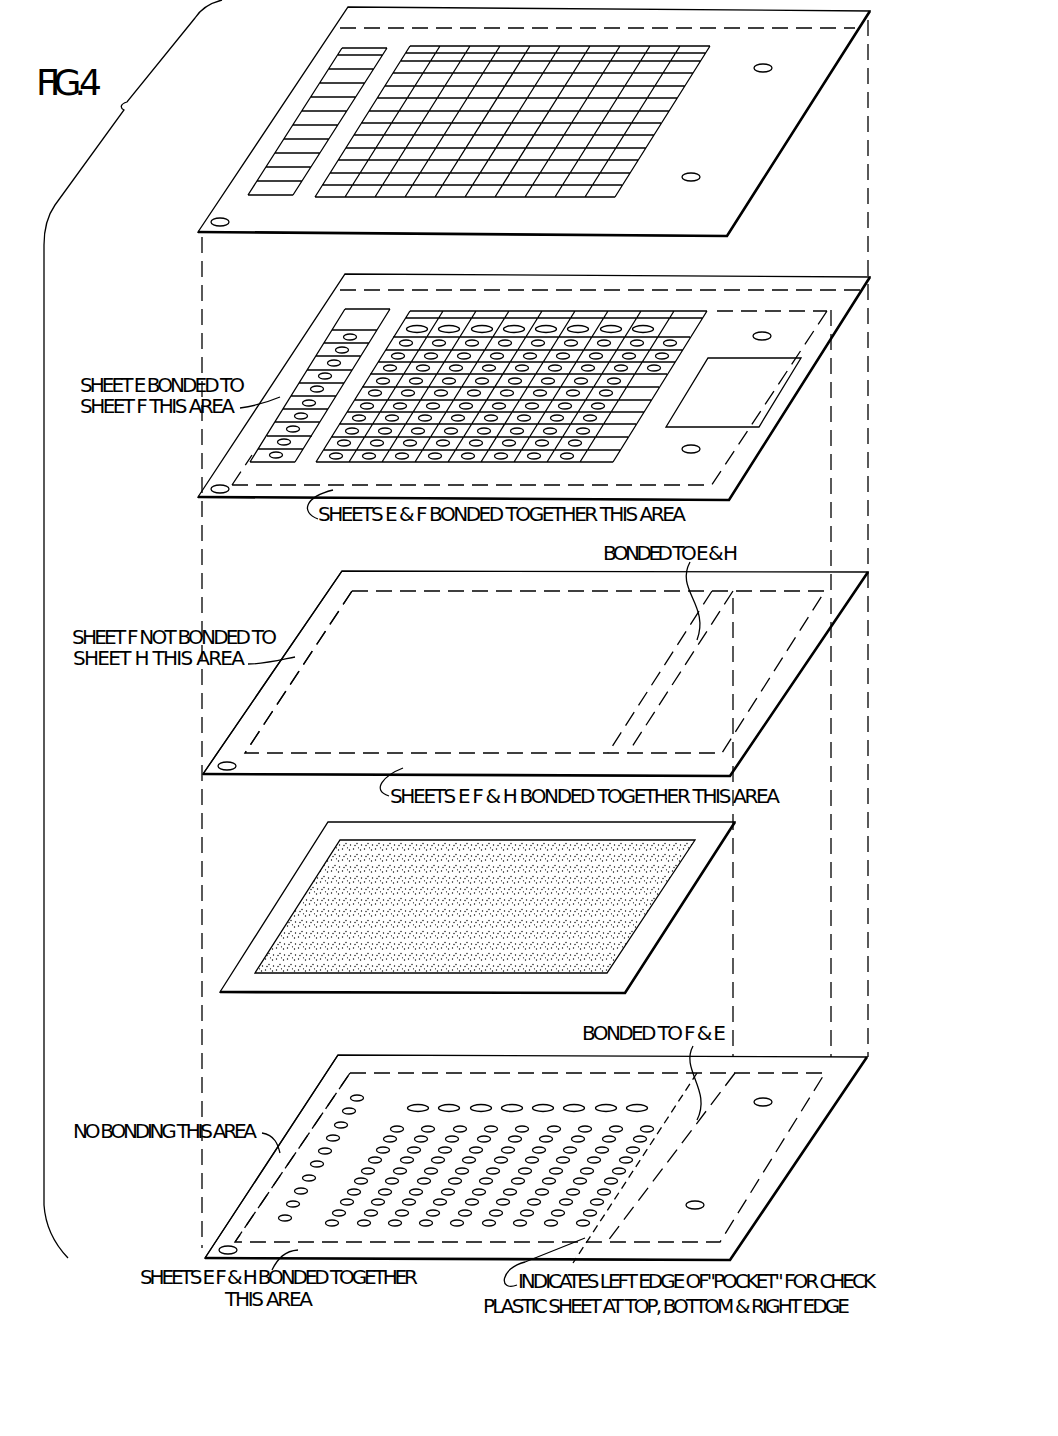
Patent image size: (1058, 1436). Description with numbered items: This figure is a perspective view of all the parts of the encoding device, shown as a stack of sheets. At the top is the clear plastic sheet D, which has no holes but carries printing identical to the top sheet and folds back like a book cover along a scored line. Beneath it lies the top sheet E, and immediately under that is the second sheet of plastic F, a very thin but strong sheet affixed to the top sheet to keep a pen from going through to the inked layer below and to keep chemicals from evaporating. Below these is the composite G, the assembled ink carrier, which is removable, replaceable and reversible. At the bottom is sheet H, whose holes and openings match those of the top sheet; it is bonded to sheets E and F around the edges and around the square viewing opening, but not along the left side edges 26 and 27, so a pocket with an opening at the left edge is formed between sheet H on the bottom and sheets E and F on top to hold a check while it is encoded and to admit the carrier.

The clear plastic sheet D is at (323, 42).
The top sheet E is at (318, 317).
The second sheet of plastic F is at (327, 590).
The left side edge of the layers 26 is at (300, 627).
The composite G is at (308, 850).
The bottom sheet H is at (318, 1080).
The left side edge of the layers 27 is at (301, 1112).